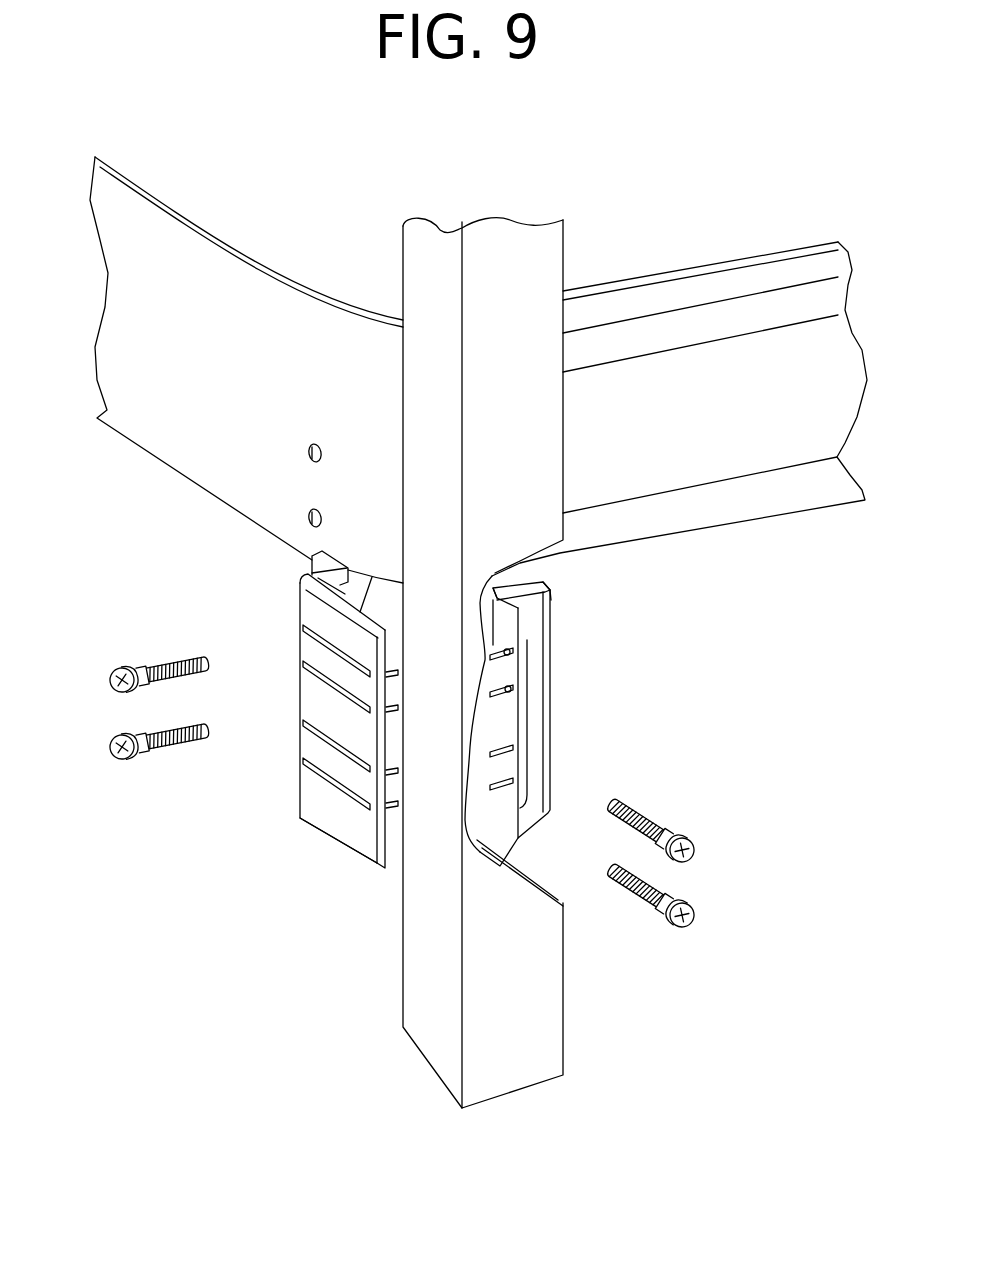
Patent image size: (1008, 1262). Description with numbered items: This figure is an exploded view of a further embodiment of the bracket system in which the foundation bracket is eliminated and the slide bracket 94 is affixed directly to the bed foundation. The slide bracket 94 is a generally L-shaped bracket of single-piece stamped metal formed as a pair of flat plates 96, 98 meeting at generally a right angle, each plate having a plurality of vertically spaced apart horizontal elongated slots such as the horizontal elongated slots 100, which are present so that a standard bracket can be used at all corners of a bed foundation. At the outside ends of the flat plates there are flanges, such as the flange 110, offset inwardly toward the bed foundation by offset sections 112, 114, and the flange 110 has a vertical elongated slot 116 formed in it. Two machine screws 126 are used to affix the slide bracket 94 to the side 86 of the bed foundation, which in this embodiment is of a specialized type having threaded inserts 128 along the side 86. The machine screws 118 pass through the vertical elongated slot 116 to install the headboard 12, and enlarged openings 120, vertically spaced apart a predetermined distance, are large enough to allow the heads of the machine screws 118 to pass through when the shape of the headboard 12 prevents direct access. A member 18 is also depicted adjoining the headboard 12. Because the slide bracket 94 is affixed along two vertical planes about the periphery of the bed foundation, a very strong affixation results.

The headboard 12 is at (547, 988).
The rail 18 is at (697, 419).
The side 86 is at (216, 376).
The slide bracket 94 is at (357, 865).
The flat plate 96 is at (330, 820).
The flat plate 98 is at (500, 836).
The horizontal elongated slots 100 is at (302, 762).
The flange 110 is at (545, 604).
The offset section 112 is at (313, 565).
The offset section 114 is at (545, 590).
The vertical elongated slot 116 is at (528, 666).
The machine screws 118 is at (698, 913).
The enlarged openings 120 is at (528, 742).
The machine screws 126 is at (108, 747).
The threaded inserts 128 is at (306, 518).